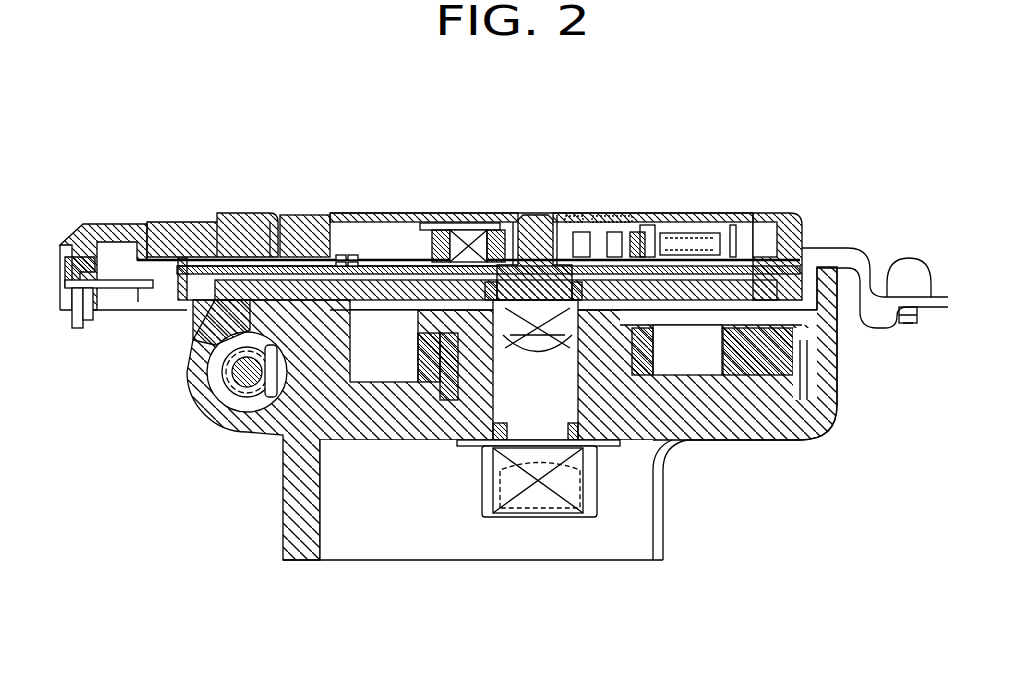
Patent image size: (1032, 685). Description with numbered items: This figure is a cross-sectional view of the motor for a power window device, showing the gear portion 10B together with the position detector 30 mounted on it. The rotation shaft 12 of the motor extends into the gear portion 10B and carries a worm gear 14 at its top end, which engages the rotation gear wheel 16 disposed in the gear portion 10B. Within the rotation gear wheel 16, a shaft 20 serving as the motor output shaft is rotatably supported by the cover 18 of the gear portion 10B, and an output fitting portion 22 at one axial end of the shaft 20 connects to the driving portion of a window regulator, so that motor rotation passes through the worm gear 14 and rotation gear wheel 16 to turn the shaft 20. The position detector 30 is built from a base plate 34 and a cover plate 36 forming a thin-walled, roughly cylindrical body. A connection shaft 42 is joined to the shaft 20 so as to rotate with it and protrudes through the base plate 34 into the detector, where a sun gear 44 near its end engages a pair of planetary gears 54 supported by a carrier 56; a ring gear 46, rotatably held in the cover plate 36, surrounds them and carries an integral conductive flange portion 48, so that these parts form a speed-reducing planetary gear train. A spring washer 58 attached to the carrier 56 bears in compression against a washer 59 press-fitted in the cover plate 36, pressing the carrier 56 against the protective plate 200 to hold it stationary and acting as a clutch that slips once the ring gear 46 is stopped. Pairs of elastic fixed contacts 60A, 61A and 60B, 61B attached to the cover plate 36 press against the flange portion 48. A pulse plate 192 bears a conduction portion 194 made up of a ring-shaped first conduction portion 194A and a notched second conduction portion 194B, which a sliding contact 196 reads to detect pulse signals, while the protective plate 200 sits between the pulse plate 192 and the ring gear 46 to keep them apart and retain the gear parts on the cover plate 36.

The gear portion 10B is at (258, 451).
The rotation shaft 12 is at (237, 372).
The worm gear 14 is at (202, 400).
The rotation gear wheel 16 is at (807, 365).
The cover 18 is at (720, 438).
The shaft 20 is at (600, 440).
The output fitting portion 22 is at (560, 518).
The position detector 30 is at (601, 131).
The base plate 34 is at (207, 300).
The cover plate 36 is at (275, 213).
The connection shaft 42 is at (523, 213).
The sun gear 44 is at (568, 213).
The ring gear 46 is at (640, 213).
The flange portion 48 is at (420, 213).
The planetary gears 54 is at (438, 230).
The carrier 56 is at (463, 232).
The spring washer 58 is at (630, 240).
The washer 59 is at (590, 213).
The fixed contact 60A is at (343, 257).
The fixed contact 60B is at (372, 173).
The fixed contact 61A is at (328, 189).
The fixed contact 61B is at (372, 189).
The pulse plate 192 is at (677, 213).
The conduction portion 194 is at (468, 212).
The first conduction portion 194A is at (377, 258).
The second conduction portion 194B is at (745, 213).
The sliding contact 196 is at (312, 213).
The protective plate 200 is at (695, 233).